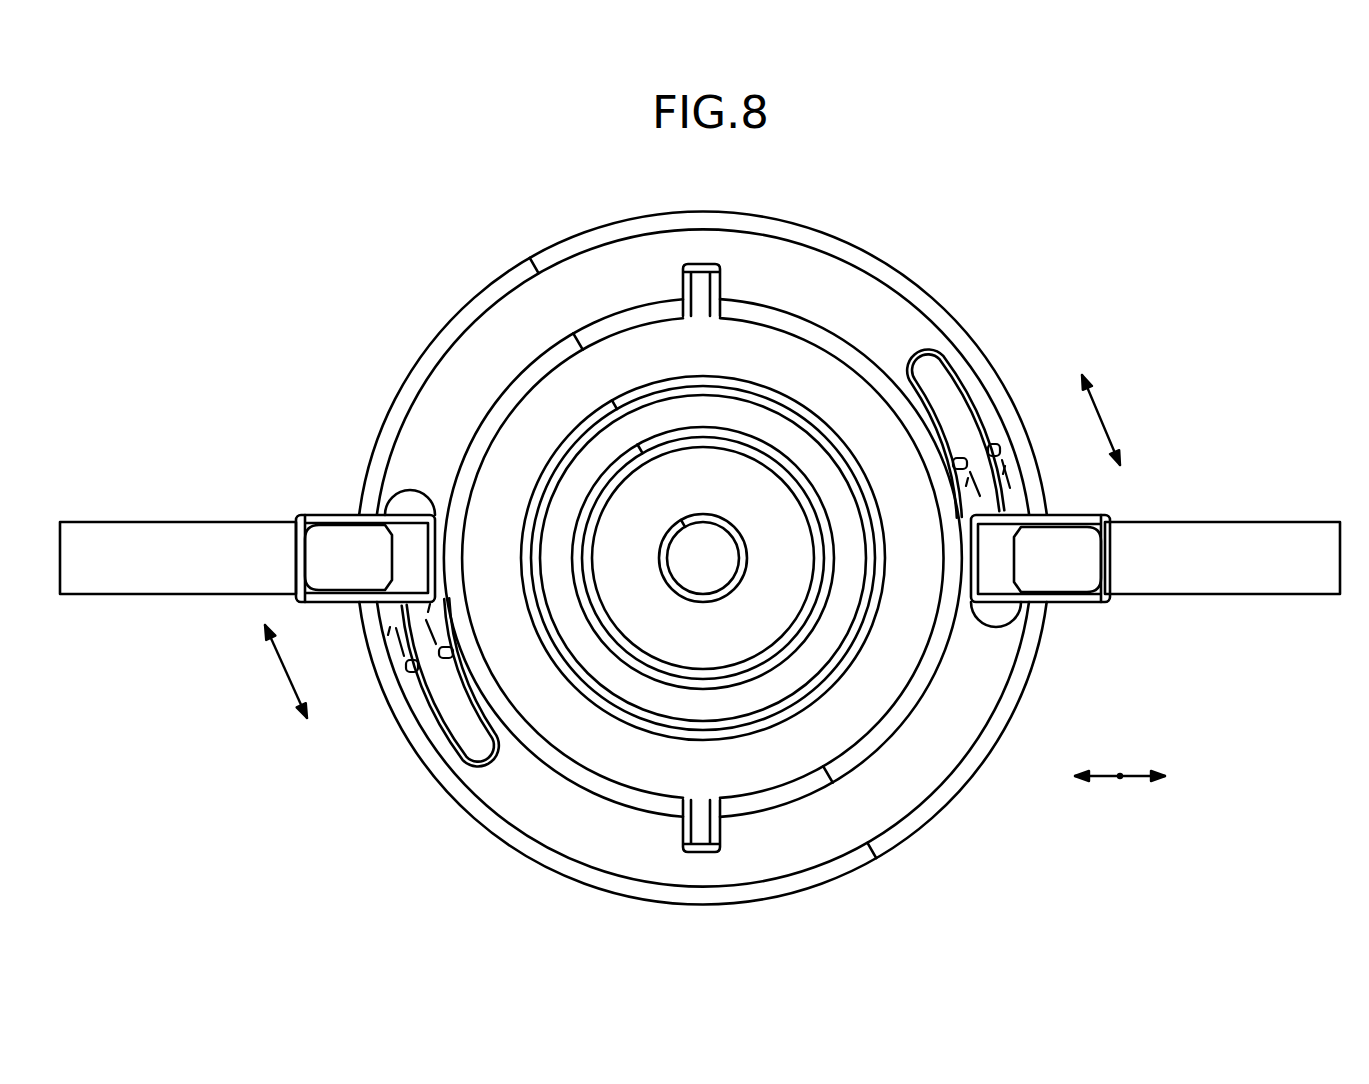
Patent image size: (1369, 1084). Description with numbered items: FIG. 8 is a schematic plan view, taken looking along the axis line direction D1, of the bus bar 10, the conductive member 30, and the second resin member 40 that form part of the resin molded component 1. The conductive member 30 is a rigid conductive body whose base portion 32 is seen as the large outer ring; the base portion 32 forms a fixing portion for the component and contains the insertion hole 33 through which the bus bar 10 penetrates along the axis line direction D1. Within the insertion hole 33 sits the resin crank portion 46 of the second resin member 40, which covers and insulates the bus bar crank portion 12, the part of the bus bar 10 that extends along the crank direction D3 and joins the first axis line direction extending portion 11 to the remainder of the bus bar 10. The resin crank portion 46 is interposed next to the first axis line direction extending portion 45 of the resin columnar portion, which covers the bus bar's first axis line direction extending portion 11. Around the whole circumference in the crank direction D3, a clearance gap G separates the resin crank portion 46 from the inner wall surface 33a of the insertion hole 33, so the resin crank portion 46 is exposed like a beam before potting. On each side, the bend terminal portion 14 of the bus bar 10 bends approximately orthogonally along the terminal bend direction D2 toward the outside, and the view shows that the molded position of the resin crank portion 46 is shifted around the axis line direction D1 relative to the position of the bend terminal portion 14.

The resin molded component 1 is at (675, 542).
The bus bar 10 is at (700, 565).
The first axis line direction extending portion 11 is at (933, 380).
The bus bar crank portion 12 is at (1000, 490).
The bend terminal portion 14 is at (152, 540).
The conductive member 30 is at (959, 291).
The base portion 32 is at (836, 288).
The insertion hole 33 is at (960, 400).
The inner wall surface 33a is at (997, 483).
The second resin member 40 is at (349, 487).
The first axis line direction extending portion 45 is at (757, 596).
The resin crank portion 46 is at (754, 614).
The clearance gap G is at (970, 470).
The axis line direction D1 is at (1121, 780).
The terminal bend direction D2 is at (1121, 774).
The crank direction D3 is at (1103, 412).